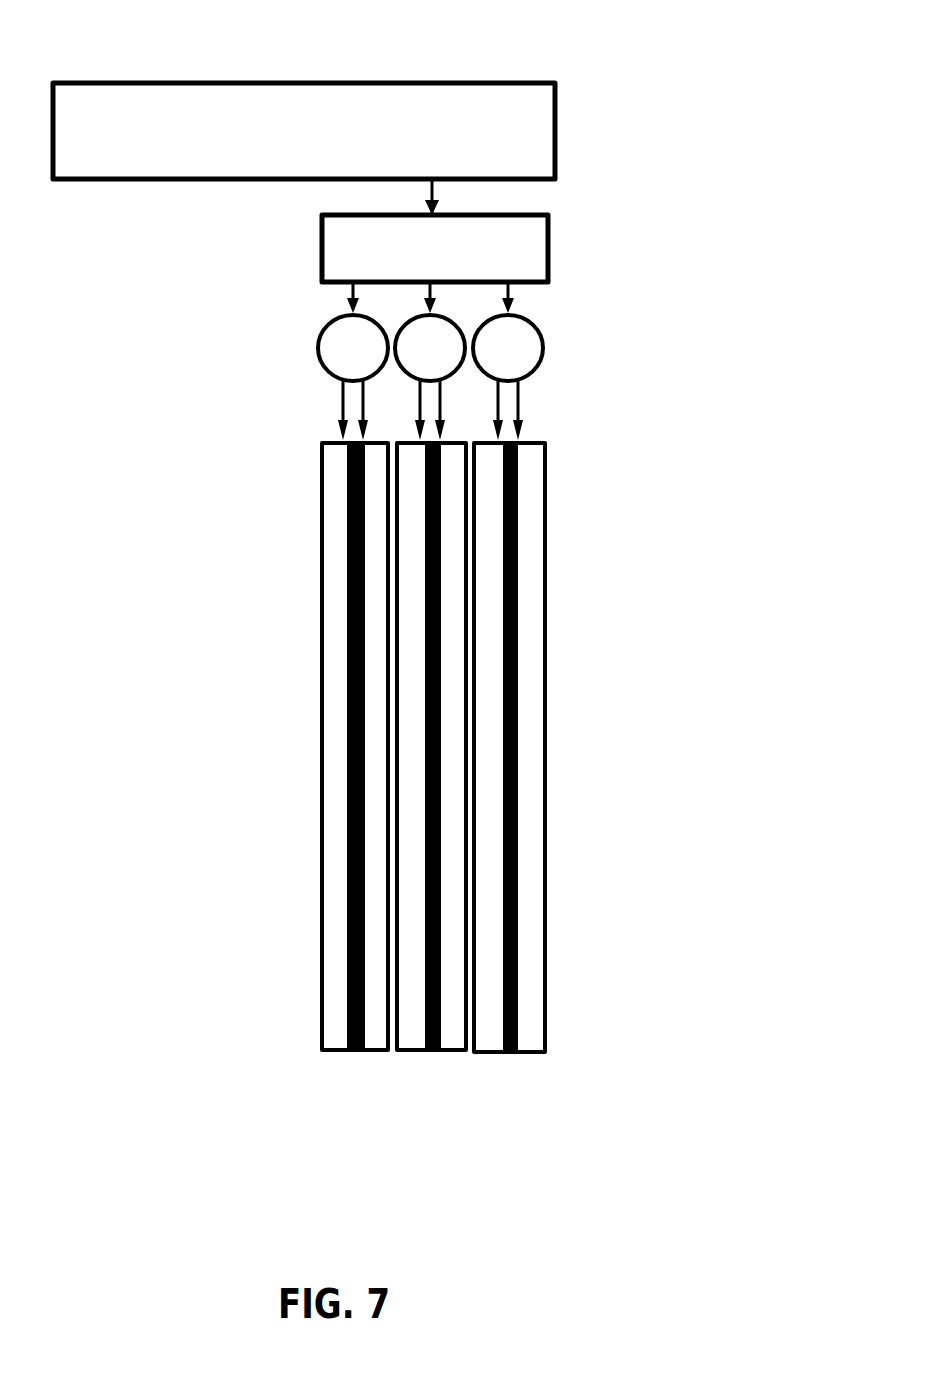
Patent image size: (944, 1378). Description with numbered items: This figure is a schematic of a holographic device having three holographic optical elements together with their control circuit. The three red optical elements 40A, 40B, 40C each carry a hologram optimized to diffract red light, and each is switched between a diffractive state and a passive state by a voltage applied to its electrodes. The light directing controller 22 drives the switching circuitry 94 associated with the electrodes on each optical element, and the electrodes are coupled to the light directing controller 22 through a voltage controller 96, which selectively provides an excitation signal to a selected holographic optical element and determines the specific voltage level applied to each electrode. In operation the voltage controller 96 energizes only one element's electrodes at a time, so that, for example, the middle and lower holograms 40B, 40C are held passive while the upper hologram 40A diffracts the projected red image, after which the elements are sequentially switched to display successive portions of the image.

The voltage controller 96 is at (457, 107).
The light directing controller 22 is at (528, 245).
The switching circuitry 94 is at (521, 360).
The red optical element 40A is at (350, 898).
The red optical element 40B is at (440, 787).
The red optical element 40C is at (522, 847).